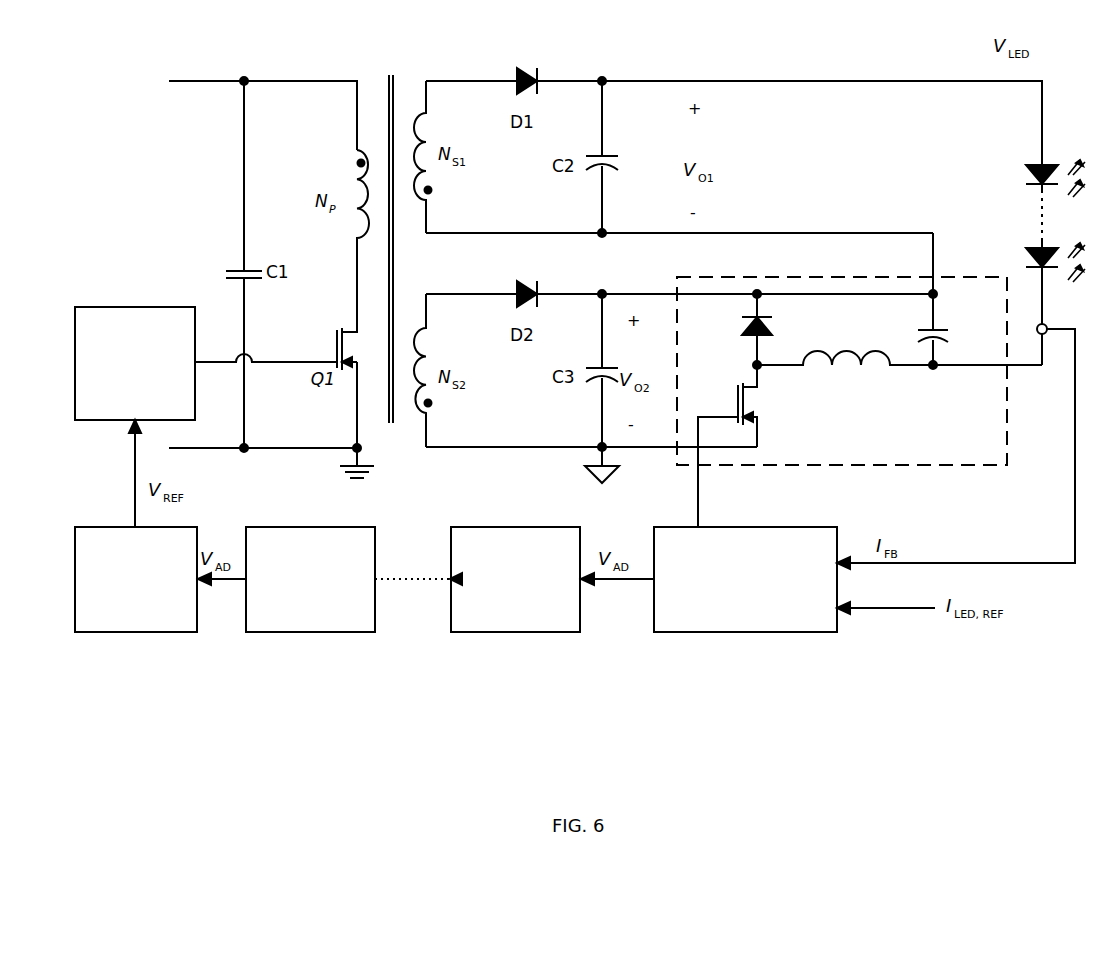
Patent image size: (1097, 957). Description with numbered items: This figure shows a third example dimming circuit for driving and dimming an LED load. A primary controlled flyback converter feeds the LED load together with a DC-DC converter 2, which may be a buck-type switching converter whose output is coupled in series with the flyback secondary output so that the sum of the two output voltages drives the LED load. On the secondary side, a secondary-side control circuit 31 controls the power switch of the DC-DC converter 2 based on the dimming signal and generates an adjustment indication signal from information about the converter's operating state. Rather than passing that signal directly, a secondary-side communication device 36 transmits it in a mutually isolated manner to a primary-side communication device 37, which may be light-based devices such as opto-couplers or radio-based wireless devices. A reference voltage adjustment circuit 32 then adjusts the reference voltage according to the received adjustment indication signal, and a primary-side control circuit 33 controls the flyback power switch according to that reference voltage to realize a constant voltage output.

The DC-DC converter 2 is at (960, 465).
The secondary-side control circuit 31 is at (684, 632).
The reference voltage adjustment circuit 32 is at (130, 632).
The primary-side control circuit 33 is at (145, 307).
The secondary-side communication device 36 is at (518, 632).
The primary-side communication device 37 is at (330, 632).